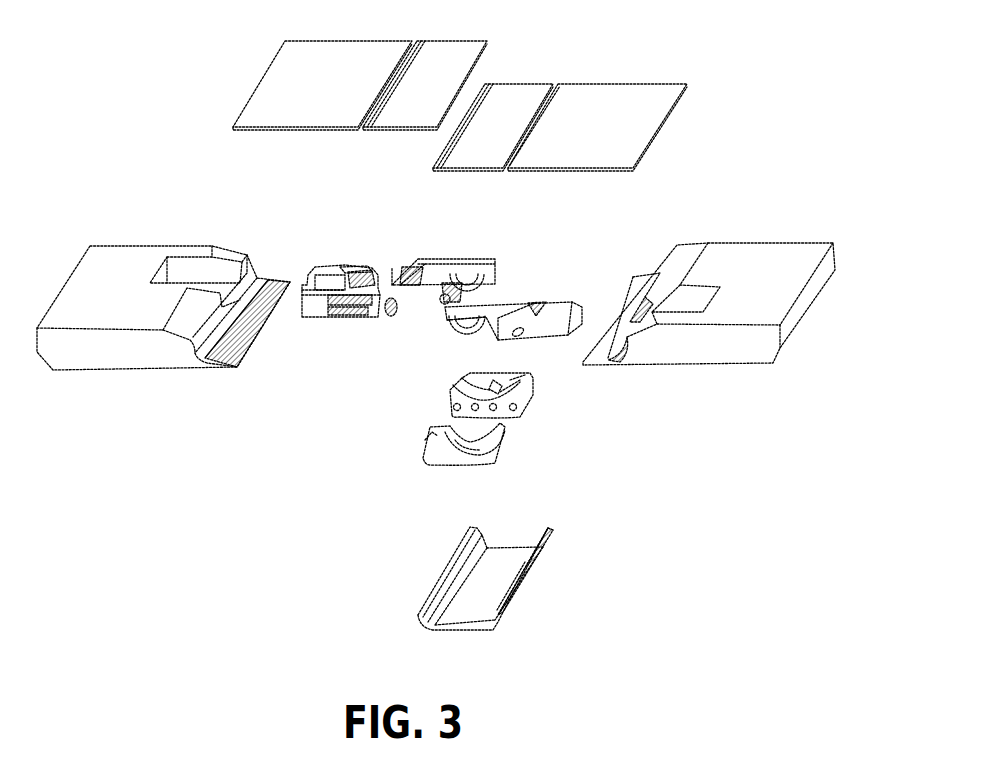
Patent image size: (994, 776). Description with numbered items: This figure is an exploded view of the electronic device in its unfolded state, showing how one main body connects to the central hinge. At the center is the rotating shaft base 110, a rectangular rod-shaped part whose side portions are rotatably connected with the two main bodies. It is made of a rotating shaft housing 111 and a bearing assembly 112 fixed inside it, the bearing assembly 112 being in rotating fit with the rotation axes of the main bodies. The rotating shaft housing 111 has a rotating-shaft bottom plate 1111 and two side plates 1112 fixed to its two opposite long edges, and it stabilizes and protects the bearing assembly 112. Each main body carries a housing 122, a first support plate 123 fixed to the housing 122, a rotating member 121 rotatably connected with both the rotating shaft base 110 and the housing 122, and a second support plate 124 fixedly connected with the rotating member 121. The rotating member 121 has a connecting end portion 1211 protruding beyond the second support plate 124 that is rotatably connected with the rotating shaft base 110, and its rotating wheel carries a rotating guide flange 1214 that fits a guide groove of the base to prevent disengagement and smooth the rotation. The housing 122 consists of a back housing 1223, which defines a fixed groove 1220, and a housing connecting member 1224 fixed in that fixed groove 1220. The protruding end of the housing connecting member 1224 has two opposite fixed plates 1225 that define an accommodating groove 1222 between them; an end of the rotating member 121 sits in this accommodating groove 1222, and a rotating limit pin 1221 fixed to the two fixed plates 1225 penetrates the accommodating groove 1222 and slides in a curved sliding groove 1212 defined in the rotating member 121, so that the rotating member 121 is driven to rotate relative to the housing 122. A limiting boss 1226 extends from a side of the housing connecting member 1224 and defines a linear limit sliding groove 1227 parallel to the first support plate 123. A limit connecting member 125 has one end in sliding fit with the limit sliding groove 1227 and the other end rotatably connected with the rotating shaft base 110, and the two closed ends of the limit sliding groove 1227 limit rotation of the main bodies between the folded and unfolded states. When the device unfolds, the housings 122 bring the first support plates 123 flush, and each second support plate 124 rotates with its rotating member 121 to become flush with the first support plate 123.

The rotating shaft base 110 is at (330, 460).
The rotating shaft housing 111 is at (433, 572).
The rotating-shaft bottom plate 1111 is at (467, 633).
The side plate 1112 is at (418, 620).
The bearing assembly 112 is at (450, 402).
The rotating member 121 is at (422, 258).
The connecting end portion 1211 is at (470, 262).
The curved sliding groove 1212 is at (440, 264).
The rotating guide flange 1214 is at (490, 306).
The housing 122 is at (690, 363).
The fixed groove 1220 is at (195, 257).
The rotating limit pin 1221 is at (392, 266).
The accommodating groove 1222 is at (317, 262).
The back housing 1223 is at (150, 363).
The housing connecting member 1224 is at (322, 318).
The fixed plate 1225 is at (358, 262).
The limiting boss 1226 is at (373, 318).
The limit sliding groove 1227 is at (344, 318).
The first support plate 123 is at (308, 130).
The second support plate 124 is at (412, 117).
The limit connecting member 125 is at (404, 318).